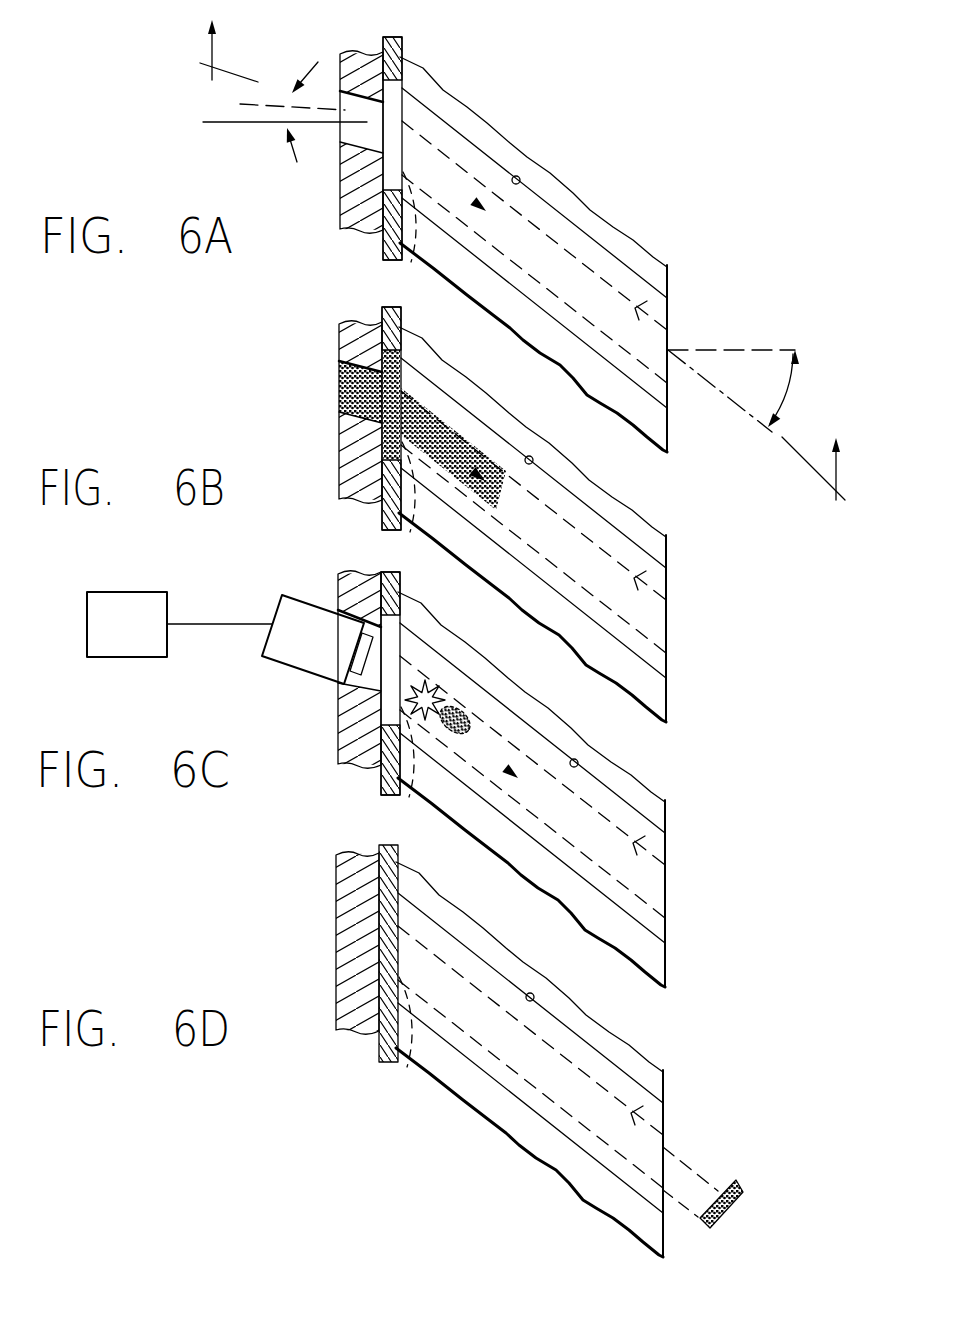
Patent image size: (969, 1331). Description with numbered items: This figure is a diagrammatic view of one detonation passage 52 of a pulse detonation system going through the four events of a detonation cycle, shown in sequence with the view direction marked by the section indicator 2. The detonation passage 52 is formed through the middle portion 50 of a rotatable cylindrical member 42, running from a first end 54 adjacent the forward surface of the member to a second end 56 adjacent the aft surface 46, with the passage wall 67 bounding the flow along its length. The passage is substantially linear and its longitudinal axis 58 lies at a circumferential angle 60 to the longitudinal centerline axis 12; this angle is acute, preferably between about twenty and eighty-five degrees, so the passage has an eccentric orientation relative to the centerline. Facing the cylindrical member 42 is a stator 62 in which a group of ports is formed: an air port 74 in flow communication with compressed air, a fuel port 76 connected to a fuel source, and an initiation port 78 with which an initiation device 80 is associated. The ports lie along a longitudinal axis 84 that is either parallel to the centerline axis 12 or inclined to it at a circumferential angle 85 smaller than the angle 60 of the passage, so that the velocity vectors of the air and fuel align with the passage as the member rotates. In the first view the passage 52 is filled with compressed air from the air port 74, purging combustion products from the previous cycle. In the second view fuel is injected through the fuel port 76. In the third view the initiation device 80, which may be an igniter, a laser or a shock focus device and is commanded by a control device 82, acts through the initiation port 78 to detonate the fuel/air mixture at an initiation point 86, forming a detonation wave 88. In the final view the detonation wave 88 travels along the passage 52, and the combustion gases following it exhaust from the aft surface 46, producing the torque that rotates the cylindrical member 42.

In FIG. 6A, the section view direction indicator 2 is at (528, 258).
In FIG. 6A, the longitudinal centerline axis 12 is at (220, 124).
In FIG. 6A, the rotatable cylindrical member 42 is at (669, 270).
In FIG. 6B, the rotatable cylindrical member 42 is at (717, 608).
In FIG. 6C, the rotatable cylindrical member 42 is at (717, 873).
In FIG. 6D, the rotatable cylindrical member 42 is at (715, 1121).
In FIG. 6A, the aft surface 46 is at (672, 452).
In FIG. 6B, the aft surface 46 is at (712, 699).
In FIG. 6C, the aft surface 46 is at (712, 964).
In FIG. 6D, the aft surface 46 is at (656, 1248).
In FIG. 6A, the middle portion 50 is at (588, 205).
In FIG. 6B, the middle portion 50 is at (562, 524).
In FIG. 6C, the middle portion 50 is at (560, 789).
In FIG. 6D, the middle portion 50 is at (549, 1059).
In FIG. 6A, the detonation passage 52 is at (670, 350).
In FIG. 6B, the detonation passage 52 is at (685, 598).
In FIG. 6C, the detonation passage 52 is at (685, 863).
In FIG. 6D, the detonation passage 52 is at (684, 1131).
In FIG. 6A, the first end 54 is at (410, 262).
In FIG. 6B, the first end 54 is at (387, 506).
In FIG. 6C, the first end 54 is at (387, 771).
In FIG. 6D, the first end 54 is at (386, 1041).
In FIG. 6A, the second end 56 is at (674, 330).
In FIG. 6B, the second end 56 is at (581, 522).
In FIG. 6C, the second end 56 is at (581, 787).
In FIG. 6D, the second end 56 is at (580, 1057).
In FIG. 6A, the longitudinal axis 58 is at (695, 383).
In FIG. 6A, the circumferential angle 60 is at (793, 402).
In FIG. 6A, the stator 62 is at (340, 217).
In FIG. 6B, the stator 62 is at (327, 418).
In FIG. 6C, the stator 62 is at (326, 683).
In FIG. 6D, the stator 62 is at (326, 953).
In FIG. 6A, the inner passage 67 is at (520, 180).
In FIG. 6B, the inner passage 67 is at (533, 463).
In FIG. 6C, the inner passage 67 is at (532, 728).
In FIG. 6D, the inner passage 67 is at (530, 998).
In FIG. 6A, the air port 74 is at (342, 90).
In FIG. 6B, the fuel port 76 is at (377, 430).
In FIG. 6C, the initiation port 78 is at (331, 680).
In FIG. 6C, the initiation device 80 is at (279, 649).
In FIG. 6C, the control device 82 is at (179, 624).
In FIG. 6A, the longitudinal axis 84 is at (240, 103).
In FIG. 6A, the circumferential angle 85 is at (297, 162).
In FIG. 6C, the initiation point 86 is at (455, 666).
In FIG. 6C, the detonation wave 88 is at (504, 703).
In FIG. 6D, the detonation wave 88 is at (738, 1196).